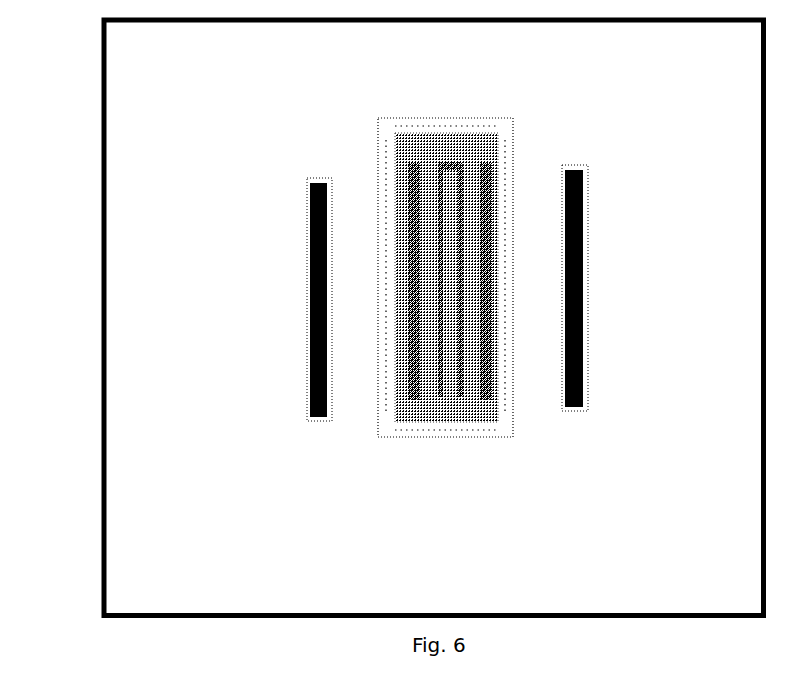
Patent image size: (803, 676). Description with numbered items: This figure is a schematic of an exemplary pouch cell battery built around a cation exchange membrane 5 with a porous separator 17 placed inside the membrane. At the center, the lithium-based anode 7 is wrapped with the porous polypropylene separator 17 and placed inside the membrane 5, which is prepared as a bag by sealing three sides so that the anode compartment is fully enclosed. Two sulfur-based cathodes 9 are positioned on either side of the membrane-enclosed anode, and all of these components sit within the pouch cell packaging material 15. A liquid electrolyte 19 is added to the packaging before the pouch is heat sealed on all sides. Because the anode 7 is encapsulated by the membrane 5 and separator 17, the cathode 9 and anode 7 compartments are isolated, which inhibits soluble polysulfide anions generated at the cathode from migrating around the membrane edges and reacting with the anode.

The cation exchange membrane 5 is at (434, 116).
The anode 7 is at (447, 399).
The cathode 9 is at (301, 196).
The packaging material 15 is at (101, 272).
The porous separator 17 is at (409, 384).
The liquid electrolyte 19 is at (569, 594).